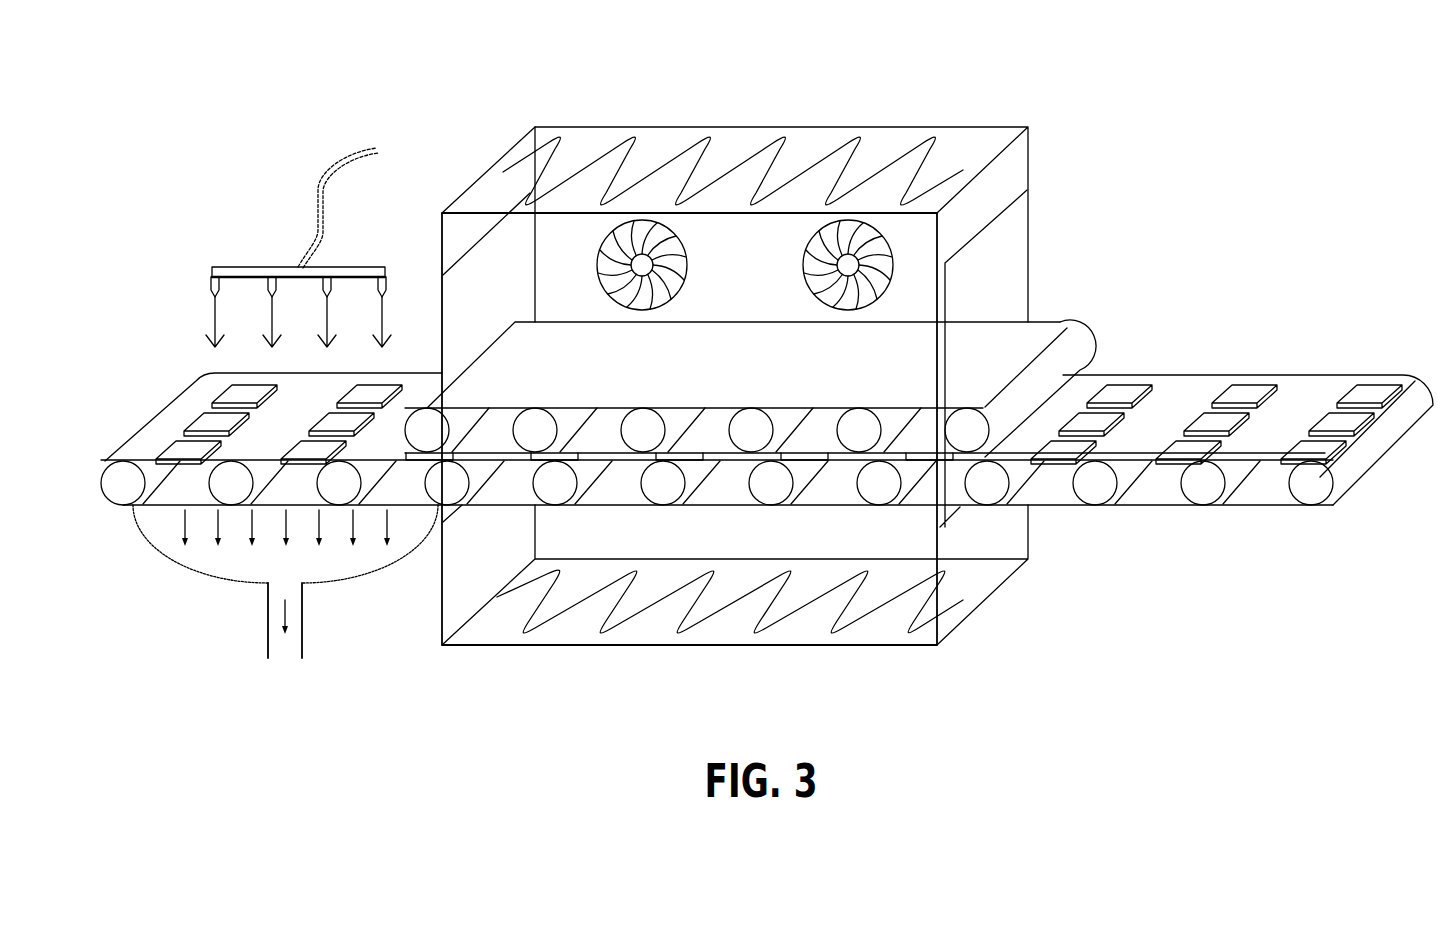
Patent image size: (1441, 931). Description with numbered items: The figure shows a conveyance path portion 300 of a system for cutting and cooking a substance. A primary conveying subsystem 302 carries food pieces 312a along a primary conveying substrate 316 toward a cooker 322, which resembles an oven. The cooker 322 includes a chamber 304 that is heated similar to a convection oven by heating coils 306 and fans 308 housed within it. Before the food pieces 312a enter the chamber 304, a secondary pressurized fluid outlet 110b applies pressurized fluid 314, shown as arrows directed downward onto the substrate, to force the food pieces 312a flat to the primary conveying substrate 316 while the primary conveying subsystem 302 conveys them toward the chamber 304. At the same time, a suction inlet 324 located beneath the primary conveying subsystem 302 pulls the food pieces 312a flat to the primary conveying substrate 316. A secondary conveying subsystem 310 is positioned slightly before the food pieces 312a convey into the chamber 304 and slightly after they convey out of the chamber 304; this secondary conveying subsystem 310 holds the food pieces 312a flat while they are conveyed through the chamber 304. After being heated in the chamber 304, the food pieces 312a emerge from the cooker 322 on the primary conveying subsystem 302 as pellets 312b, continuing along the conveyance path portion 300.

The conveyance path portion 300 is at (210, 665).
The primary conveying subsystem 302 is at (194, 367).
The chamber 304 is at (466, 299).
The heating coils 306 is at (852, 138).
The fans 308 is at (835, 305).
The secondary conveying subsystem 310 is at (1062, 308).
The food pieces 312a is at (262, 390).
The pellets 312b is at (1248, 392).
The pressurized fluid 314 is at (215, 313).
The primary conveying substrate 316 is at (245, 452).
The cooker 322 is at (465, 185).
The secondary pressurized fluid outlet 110b is at (303, 199).
The suction inlet 324 is at (258, 603).